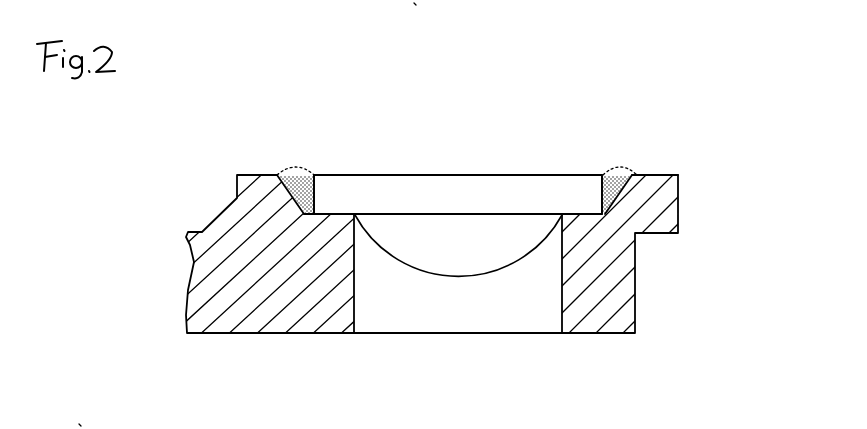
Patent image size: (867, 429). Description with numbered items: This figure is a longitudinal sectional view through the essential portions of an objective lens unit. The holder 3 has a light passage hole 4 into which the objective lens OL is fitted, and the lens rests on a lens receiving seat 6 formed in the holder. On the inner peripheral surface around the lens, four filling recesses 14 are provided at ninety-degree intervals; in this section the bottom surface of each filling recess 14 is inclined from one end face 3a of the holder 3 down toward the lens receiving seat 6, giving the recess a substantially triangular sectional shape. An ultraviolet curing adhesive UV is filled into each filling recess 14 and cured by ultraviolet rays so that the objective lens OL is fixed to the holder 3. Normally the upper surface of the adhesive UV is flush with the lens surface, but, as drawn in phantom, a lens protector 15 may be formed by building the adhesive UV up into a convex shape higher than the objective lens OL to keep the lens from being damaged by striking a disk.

The holder 3 is at (623, 289).
The end face of holder 3a is at (655, 175).
The light passage hole 4 is at (354, 303).
The lens receiving seat 6 is at (555, 209).
The objective lens OL is at (462, 195).
The filling recess 14 is at (322, 195).
The lens protector 15 is at (294, 166).
The ultraviolet curing adhesive UV is at (302, 194).